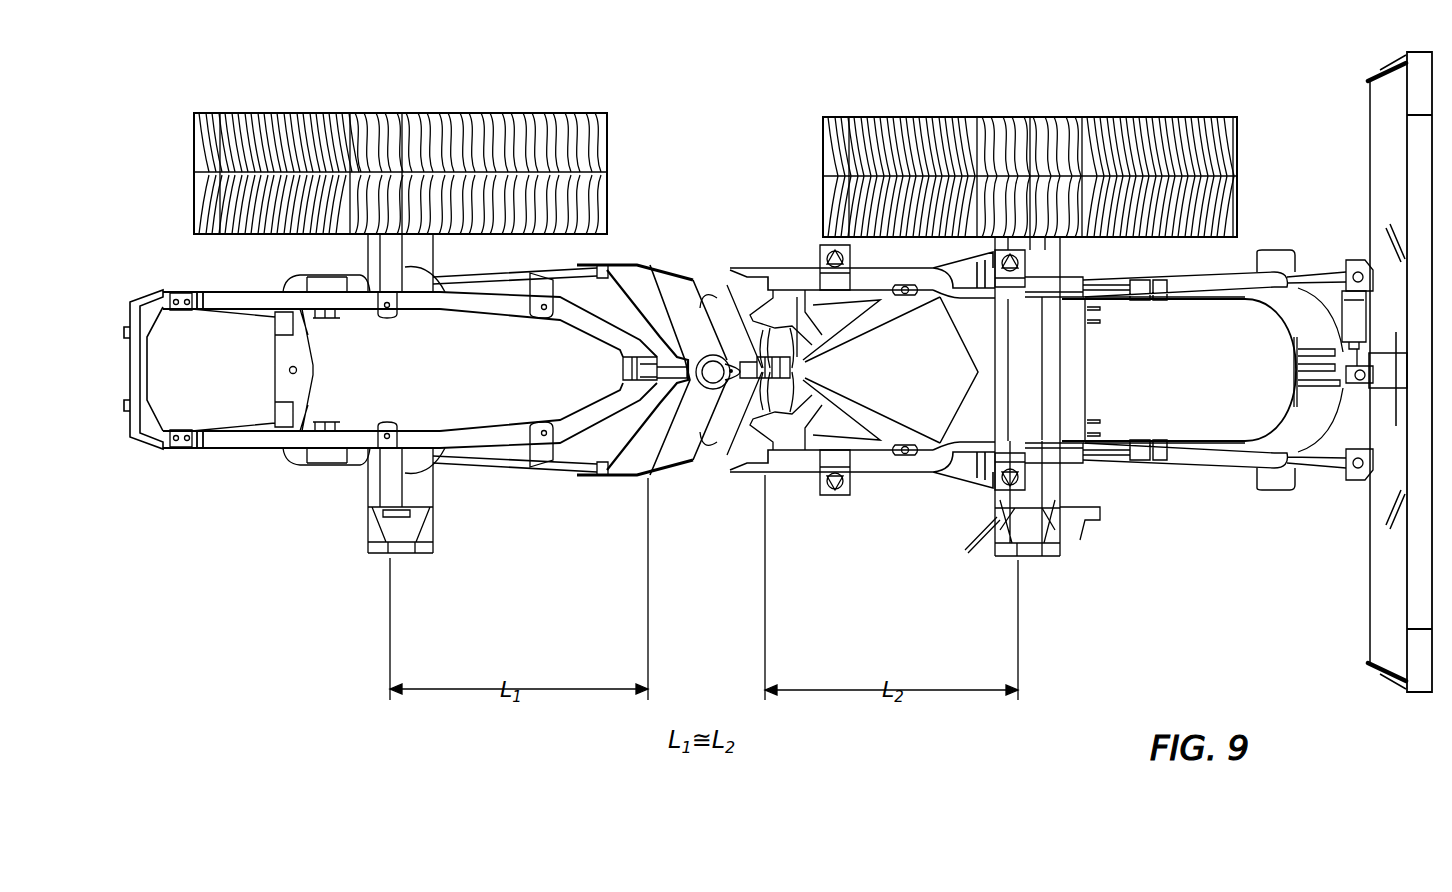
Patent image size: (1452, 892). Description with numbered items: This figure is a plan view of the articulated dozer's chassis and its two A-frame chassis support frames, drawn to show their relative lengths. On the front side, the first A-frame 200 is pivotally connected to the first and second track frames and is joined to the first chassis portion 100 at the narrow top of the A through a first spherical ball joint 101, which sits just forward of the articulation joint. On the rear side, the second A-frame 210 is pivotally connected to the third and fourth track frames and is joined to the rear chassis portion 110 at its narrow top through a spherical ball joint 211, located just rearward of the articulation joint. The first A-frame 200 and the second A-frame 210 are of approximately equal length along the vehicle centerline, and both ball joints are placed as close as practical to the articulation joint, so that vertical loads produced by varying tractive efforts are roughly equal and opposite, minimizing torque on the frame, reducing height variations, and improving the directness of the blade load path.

The first chassis portion 100 is at (797, 305).
The first spherical ball joint 101 is at (809, 378).
The rear chassis portion 110 is at (680, 288).
The first A-frame 200 is at (1050, 381).
The second A-frame 210 is at (432, 379).
The spherical ball joint 211 is at (603, 375).